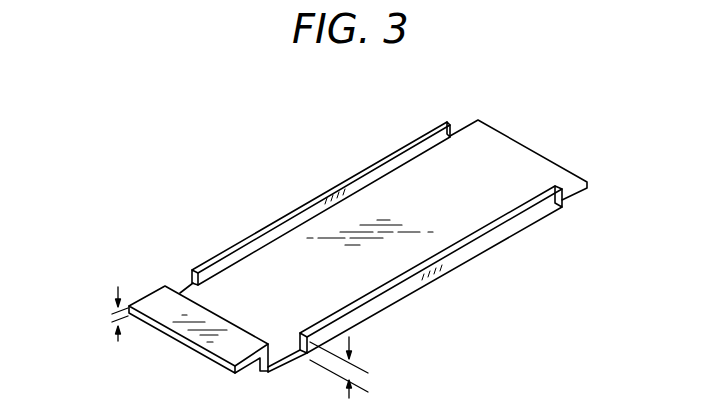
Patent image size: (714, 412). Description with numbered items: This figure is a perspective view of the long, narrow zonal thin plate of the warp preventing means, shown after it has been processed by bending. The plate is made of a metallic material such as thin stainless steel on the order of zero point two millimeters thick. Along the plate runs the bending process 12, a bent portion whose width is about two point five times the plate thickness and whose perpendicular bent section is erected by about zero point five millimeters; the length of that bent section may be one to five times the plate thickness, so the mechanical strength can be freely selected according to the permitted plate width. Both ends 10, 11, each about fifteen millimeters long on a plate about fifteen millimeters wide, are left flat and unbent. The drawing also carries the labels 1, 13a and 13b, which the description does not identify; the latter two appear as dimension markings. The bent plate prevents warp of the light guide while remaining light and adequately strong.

The plate assembly 1 is at (477, 147).
The end of the zonal thin plate 10 is at (232, 348).
The end of the zonal thin plate 11 is at (547, 157).
The bending process 12 is at (347, 181).
The thickness of first plate 13a is at (112, 316).
The height of rail 13b is at (365, 378).